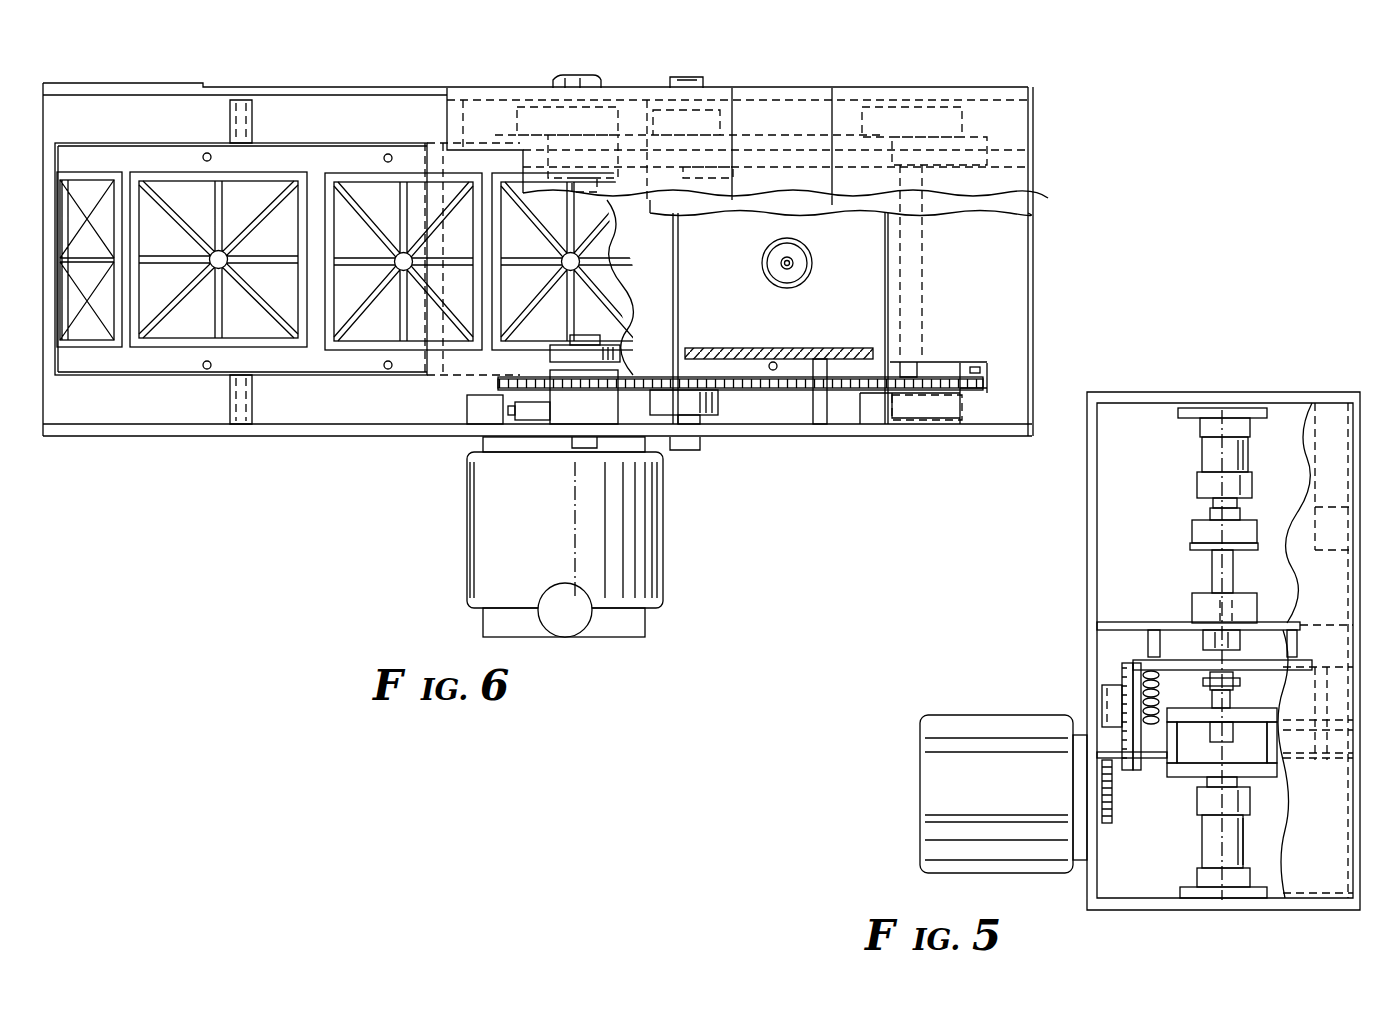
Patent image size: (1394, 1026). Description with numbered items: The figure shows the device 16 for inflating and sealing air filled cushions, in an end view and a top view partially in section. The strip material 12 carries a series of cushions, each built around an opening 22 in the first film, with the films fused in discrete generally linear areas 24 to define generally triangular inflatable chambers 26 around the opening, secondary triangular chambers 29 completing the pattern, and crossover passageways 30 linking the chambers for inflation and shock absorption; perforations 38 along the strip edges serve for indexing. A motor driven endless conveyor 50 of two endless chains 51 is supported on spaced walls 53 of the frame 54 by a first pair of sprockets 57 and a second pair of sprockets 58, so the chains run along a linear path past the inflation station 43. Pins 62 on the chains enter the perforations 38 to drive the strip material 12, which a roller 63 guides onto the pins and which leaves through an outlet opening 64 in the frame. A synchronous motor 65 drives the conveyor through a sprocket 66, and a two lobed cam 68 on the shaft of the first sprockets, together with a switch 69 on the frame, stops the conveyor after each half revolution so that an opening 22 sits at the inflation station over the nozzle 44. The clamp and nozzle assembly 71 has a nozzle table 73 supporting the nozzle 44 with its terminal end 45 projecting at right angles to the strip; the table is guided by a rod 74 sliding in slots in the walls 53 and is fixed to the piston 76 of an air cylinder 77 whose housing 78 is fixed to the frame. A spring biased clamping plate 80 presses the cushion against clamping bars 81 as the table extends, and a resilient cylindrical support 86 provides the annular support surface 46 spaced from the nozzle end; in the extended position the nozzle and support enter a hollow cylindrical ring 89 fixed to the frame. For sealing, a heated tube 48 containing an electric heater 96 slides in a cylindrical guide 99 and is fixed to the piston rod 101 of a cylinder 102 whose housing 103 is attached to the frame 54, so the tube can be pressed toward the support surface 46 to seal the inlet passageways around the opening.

In FIG. 6, the strip material 12 is at (313, 165).
In FIG. 6, the device 16 is at (500, 82).
In FIG. 5, the device 16 is at (1330, 385).
In FIG. 6, the openings 22 is at (402, 258).
In FIG. 6, the discrete generally linear areas 24 is at (362, 203).
In FIG. 6, the generally triangular inflatable chambers 26 is at (391, 273).
In FIG. 6, the secondary triangular chambers 29 is at (289, 330).
In FIG. 6, the crossover passageway 30 is at (245, 200).
In FIG. 6, the perforations 38 is at (205, 155).
In FIG. 6, the inflation station 43 is at (808, 285).
In FIG. 5, the inflation station 43 is at (1163, 788).
In FIG. 6, the nozzle 44 is at (802, 260).
In FIG. 5, the nozzle 44 is at (1236, 675).
In FIG. 6, the terminal end 45 is at (795, 265).
In FIG. 6, the support surface 46 is at (772, 268).
In FIG. 5, the support surface 46 is at (1210, 675).
In FIG. 5, the heated tube 48 is at (1210, 576).
In FIG. 6, the conveyor 50 is at (745, 395).
In FIG. 5, the conveyor 50 is at (1112, 668).
In FIG. 6, the endless chains 51 is at (806, 392).
In FIG. 5, the endless chains 51 is at (1122, 677).
In FIG. 6, the walls 53 is at (898, 87).
In FIG. 5, the walls 53 is at (1090, 520).
In FIG. 6, the frame 54 is at (1034, 142).
In FIG. 5, the frame 54 is at (1343, 421).
In FIG. 6, the first pair of sprockets 57 is at (538, 388).
In FIG. 6, the second pair of sprockets 58 is at (945, 375).
In FIG. 5, the second pair of sprockets 58 is at (1102, 695).
In FIG. 6, the pins 62 is at (773, 362).
In FIG. 6, the roller 63 is at (557, 348).
In FIG. 5, the outlet opening 64 is at (1318, 645).
In FIG. 6, the synchronous motor 65 is at (650, 577).
In FIG. 5, the synchronous motor 65 is at (975, 717).
In FIG. 5, the sprocket 66 is at (1108, 825).
In FIG. 6, the cam 68 is at (528, 422).
In FIG. 6, the switch 69 is at (485, 409).
In FIG. 6, the clamp and nozzle assembly 71 is at (886, 288).
In FIG. 5, the clamp and nozzle assembly 71 is at (1277, 783).
In FIG. 5, the nozzle table 73 is at (1260, 778).
In FIG. 6, the rod 74 is at (822, 412).
In FIG. 5, the rod 74 is at (1147, 760).
In FIG. 5, the piston 76 is at (1216, 778).
In FIG. 5, the air cylinder 77 is at (1203, 848).
In FIG. 5, the housing 78 is at (1200, 880).
In FIG. 6, the clamping plate 80 is at (780, 318).
In FIG. 5, the clamping plate 80 is at (1162, 632).
In FIG. 6, the clamping bars 81 is at (705, 348).
In FIG. 5, the clamping bars 81 is at (1150, 637).
In FIG. 5, the cylindrical support 86 is at (1205, 712).
In FIG. 5, the hollow cylindrical ring 89 is at (1205, 640).
In FIG. 5, the electric heater 96 is at (1240, 605).
In FIG. 5, the cylindrical guide 99 is at (1250, 612).
In FIG. 5, the piston rod 101 is at (1212, 505).
In FIG. 5, the cylinder 102 is at (1202, 452).
In FIG. 5, the housing 103 is at (1200, 428).